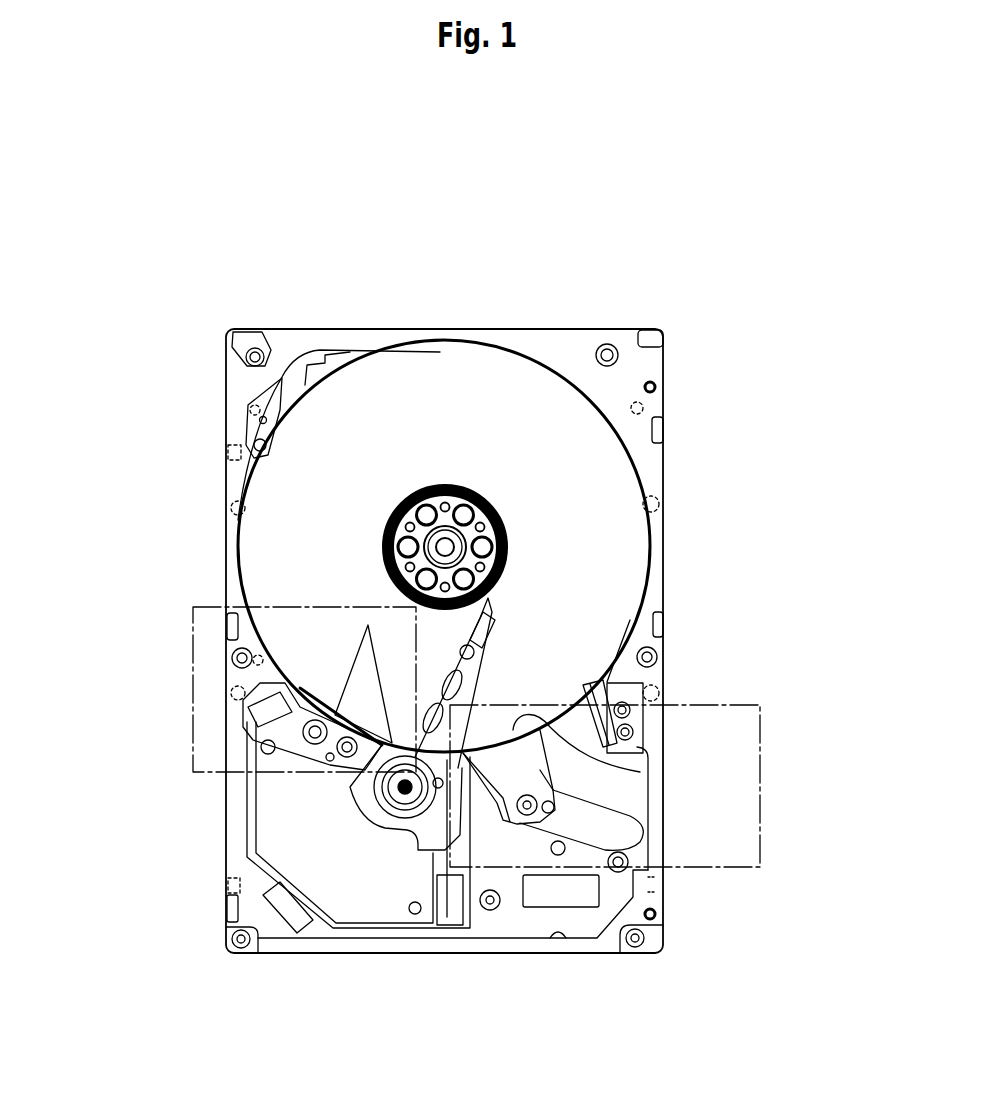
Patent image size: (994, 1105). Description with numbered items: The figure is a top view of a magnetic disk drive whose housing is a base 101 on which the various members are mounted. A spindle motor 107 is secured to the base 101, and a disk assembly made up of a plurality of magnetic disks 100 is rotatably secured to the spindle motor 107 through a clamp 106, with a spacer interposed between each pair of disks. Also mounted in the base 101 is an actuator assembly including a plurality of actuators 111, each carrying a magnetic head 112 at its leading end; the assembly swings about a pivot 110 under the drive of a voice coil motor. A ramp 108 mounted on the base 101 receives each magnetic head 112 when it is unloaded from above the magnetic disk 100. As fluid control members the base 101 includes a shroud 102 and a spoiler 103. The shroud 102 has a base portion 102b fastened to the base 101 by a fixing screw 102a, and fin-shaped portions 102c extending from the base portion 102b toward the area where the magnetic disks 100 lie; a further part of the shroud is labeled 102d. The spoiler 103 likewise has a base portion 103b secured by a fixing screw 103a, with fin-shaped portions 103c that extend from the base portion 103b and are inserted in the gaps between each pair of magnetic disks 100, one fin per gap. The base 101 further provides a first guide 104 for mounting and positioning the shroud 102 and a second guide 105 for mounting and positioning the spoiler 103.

The magnetic disk 100 is at (437, 385).
The base 101 is at (548, 343).
The shroud 102 is at (681, 790).
The fixing screw 102a is at (560, 797).
The base portion 102b is at (547, 790).
The fin-shaped portions 102c is at (622, 768).
The voice coil motor part 102d is at (540, 771).
The spoiler 103 is at (222, 706).
The fixing screw 103a is at (305, 760).
The base portion 103b is at (283, 710).
The fin-shaped portions 103c is at (343, 698).
The first guide 104 is at (620, 793).
The second guide 105 is at (340, 765).
The clamp 106 is at (503, 518).
The spindle motor 107 is at (447, 545).
The ramp 108 is at (592, 671).
The pivot 110 is at (325, 775).
The actuator 111 is at (480, 672).
The magnetic head 112 is at (495, 613).